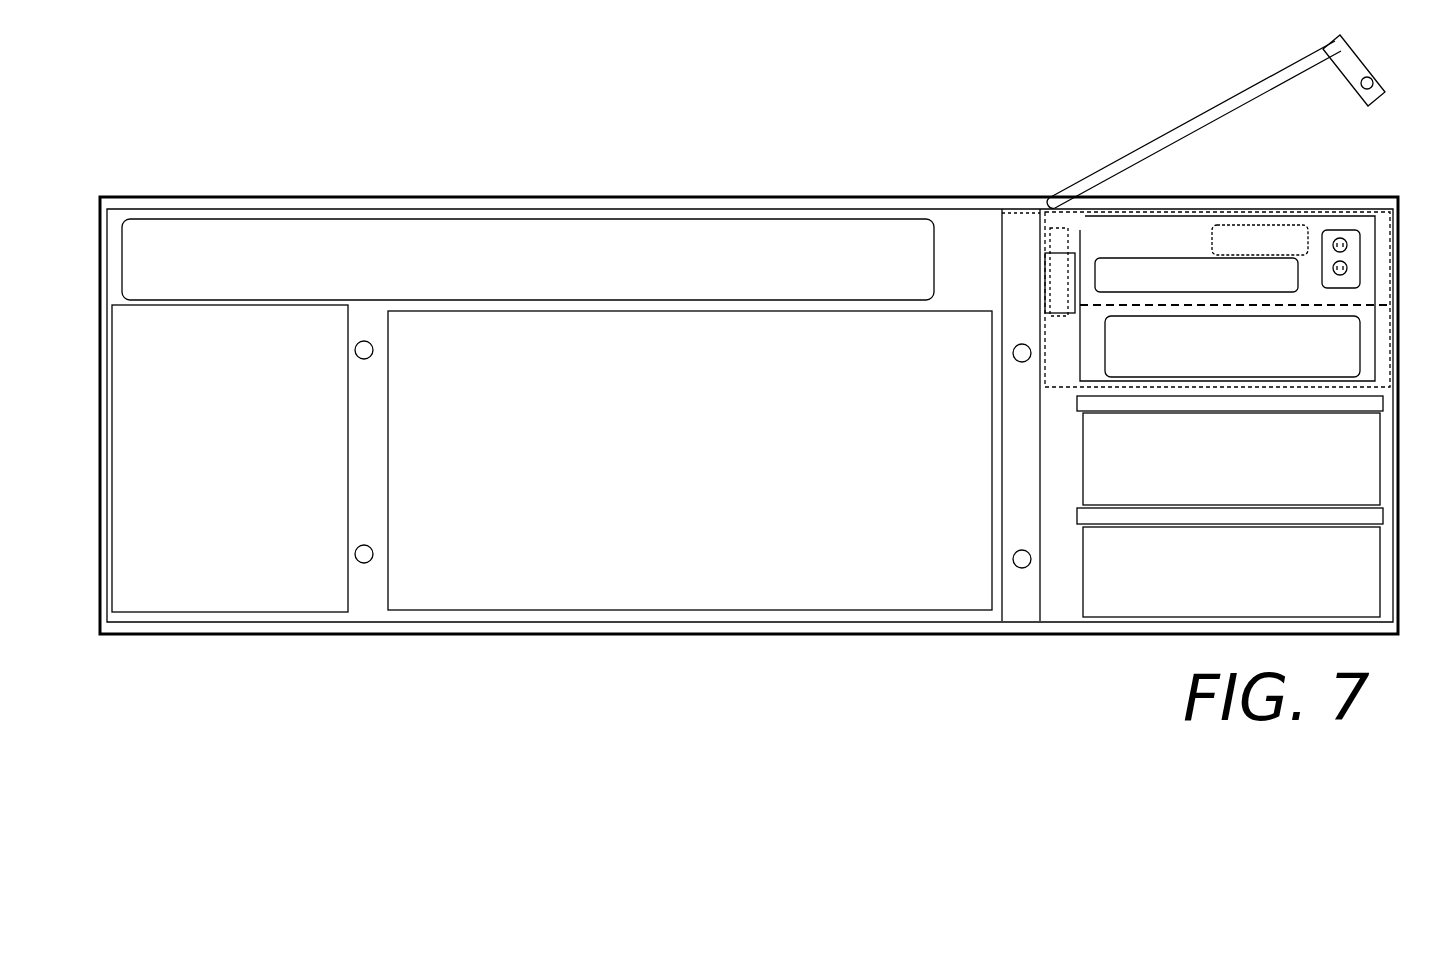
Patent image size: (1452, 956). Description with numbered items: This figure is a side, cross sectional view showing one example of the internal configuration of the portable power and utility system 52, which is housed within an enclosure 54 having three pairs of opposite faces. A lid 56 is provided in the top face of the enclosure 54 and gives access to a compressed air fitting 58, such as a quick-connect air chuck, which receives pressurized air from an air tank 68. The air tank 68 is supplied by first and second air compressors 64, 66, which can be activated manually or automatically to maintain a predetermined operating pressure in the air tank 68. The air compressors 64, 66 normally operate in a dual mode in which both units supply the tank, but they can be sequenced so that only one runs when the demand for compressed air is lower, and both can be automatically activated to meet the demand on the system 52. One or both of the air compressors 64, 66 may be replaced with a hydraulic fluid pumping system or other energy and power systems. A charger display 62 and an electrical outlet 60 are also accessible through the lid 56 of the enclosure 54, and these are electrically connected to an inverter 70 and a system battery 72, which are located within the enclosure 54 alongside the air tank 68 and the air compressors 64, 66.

The portable power and utility system 52 is at (528, 179).
The enclosure 54 is at (197, 196).
The lid 56 is at (1200, 115).
The compressed air fitting 58 is at (1277, 228).
The electrical outlet 60 is at (1360, 256).
The charger display 62 is at (1217, 299).
The first air compressor 64 is at (1230, 450).
The second air compressor 66 is at (1230, 562).
The air tank 68 is at (528, 259).
The inverter 70 is at (230, 458).
The system battery 72 is at (690, 460).